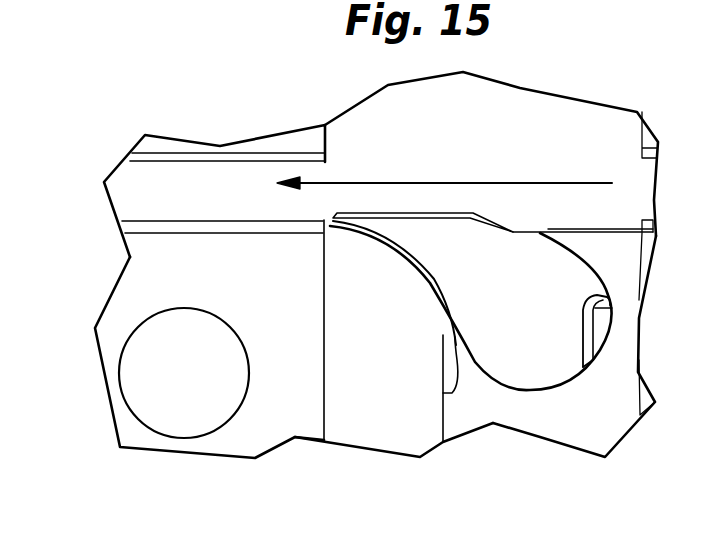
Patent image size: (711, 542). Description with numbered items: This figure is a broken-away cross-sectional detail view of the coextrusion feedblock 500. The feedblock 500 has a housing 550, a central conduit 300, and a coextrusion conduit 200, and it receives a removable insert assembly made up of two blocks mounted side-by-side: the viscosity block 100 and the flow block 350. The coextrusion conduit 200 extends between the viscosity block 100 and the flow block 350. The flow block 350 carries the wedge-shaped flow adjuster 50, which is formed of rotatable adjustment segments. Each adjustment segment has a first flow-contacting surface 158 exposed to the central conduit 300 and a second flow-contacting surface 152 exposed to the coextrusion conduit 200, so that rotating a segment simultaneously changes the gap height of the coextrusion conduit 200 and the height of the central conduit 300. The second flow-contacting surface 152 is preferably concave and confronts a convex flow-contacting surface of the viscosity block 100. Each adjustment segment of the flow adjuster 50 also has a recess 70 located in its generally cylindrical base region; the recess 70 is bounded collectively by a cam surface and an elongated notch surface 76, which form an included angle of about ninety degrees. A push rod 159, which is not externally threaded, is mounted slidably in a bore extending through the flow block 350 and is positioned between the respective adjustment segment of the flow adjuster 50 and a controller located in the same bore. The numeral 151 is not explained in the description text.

The coextrusion feedblock 500 is at (619, 64).
The central conduit 300 is at (203, 173).
The viscosity block 100 is at (340, 342).
The housing 550 is at (113, 345).
The coextrusion conduit 200 is at (440, 308).
The second flow-contacting surface 152 is at (413, 268).
The first flow-contacting surface 158 is at (415, 213).
The wedge-shaped flow adjuster 50 is at (497, 360).
The recess 70 is at (590, 327).
The recess 151 is at (608, 318).
The push rod 159 is at (598, 335).
The notch surface 76 is at (598, 353).
The flow block 350 is at (617, 413).